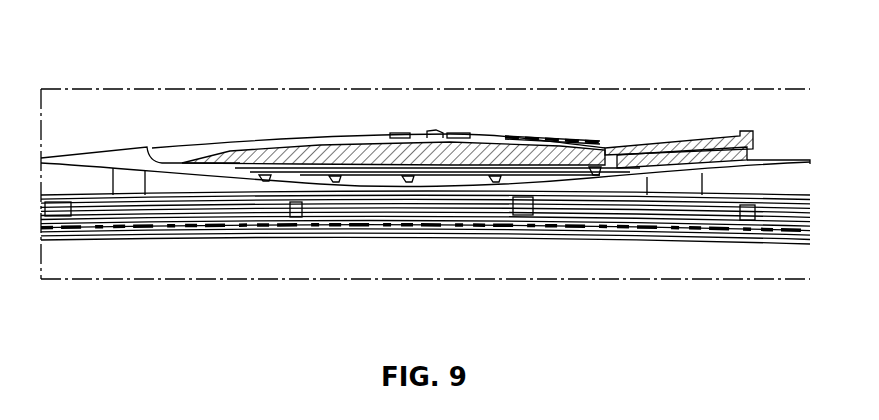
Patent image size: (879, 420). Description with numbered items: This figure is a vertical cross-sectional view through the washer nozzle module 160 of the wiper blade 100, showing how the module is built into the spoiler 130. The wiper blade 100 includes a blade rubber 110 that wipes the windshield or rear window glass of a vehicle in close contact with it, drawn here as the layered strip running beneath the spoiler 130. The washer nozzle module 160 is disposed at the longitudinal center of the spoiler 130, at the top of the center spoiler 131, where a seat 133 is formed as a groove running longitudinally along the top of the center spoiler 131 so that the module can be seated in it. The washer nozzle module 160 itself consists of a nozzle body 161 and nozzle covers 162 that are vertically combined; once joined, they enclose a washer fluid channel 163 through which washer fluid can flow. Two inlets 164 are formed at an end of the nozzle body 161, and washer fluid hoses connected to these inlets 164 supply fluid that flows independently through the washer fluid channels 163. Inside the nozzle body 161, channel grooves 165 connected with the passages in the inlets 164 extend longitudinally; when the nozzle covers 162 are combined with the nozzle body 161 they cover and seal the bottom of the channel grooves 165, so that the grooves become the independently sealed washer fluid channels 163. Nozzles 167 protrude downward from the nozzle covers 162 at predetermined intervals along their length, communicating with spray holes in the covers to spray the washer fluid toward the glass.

The wiper blade 100 is at (245, 115).
The blade rubber 110 is at (97, 247).
The spoiler 130 is at (425, 121).
The center spoiler 131 is at (72, 178).
The seat 133 is at (223, 172).
The washer nozzle module 160 is at (313, 120).
The nozzle body 161 is at (490, 136).
The nozzle covers 162 is at (530, 180).
The washer fluid channel 163 is at (453, 180).
The inlets 164 is at (680, 143).
The channel grooves 165 is at (491, 236).
The nozzles 167 is at (410, 182).